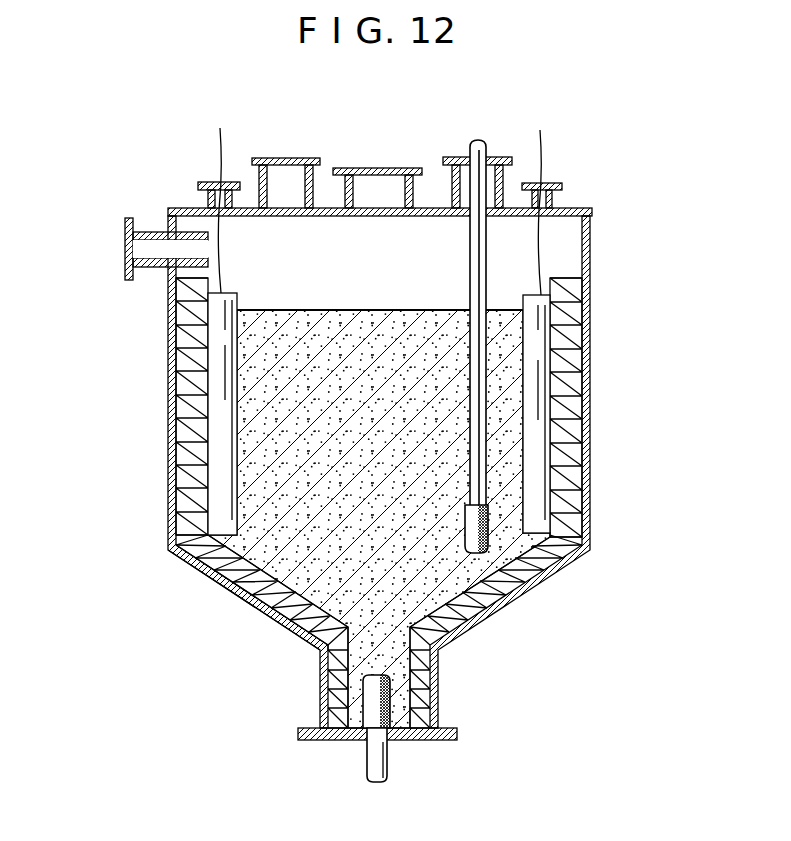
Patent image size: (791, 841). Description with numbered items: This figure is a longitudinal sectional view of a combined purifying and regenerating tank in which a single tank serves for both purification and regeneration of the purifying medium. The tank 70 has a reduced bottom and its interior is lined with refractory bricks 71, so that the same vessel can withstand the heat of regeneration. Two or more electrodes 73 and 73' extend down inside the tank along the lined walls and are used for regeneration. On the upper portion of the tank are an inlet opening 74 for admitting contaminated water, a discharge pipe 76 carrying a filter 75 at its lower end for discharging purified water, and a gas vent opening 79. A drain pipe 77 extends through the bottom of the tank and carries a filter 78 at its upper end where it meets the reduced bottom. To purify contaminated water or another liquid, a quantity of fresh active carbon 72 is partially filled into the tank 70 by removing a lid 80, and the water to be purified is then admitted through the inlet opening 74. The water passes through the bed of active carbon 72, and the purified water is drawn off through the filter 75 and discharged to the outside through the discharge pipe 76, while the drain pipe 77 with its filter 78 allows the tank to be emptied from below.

The tank 70 is at (592, 235).
The refractory bricks 71 is at (575, 360).
The fresh active carbon 72 is at (283, 580).
The electrode 73 is at (584, 331).
The electrode 73' is at (179, 331).
The inlet opening 74 is at (132, 250).
The filter 75 is at (480, 556).
The discharge pipe 76 is at (470, 143).
The drain pipe 77 is at (388, 765).
The filter 78 is at (392, 697).
The gas vent opening 79 is at (290, 166).
The lid 80 is at (378, 170).